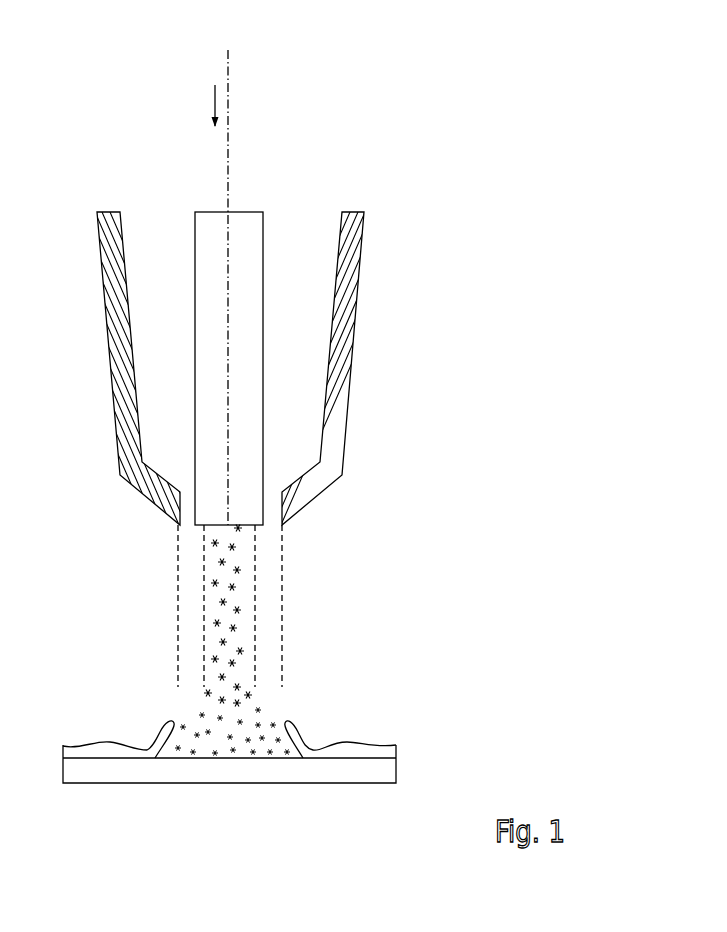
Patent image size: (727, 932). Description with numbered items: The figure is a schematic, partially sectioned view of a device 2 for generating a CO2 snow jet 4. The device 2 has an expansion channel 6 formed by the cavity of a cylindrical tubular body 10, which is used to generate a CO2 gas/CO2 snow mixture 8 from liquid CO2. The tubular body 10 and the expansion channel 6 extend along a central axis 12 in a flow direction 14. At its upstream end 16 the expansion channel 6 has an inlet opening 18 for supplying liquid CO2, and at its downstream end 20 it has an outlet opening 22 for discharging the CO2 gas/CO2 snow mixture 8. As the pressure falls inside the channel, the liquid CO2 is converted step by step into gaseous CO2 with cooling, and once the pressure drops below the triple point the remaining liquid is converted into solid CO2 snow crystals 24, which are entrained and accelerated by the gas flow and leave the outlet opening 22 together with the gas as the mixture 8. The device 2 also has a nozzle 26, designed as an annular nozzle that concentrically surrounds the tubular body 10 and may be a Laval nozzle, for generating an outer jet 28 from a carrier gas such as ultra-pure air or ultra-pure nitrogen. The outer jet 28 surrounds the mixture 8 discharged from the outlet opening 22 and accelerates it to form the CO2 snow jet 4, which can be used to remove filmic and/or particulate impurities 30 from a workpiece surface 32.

The device 2 is at (127, 57).
The CO2 snow jet 4 is at (386, 611).
The expansion channel 6 is at (210, 238).
The CO2 gas/CO2 snow mixture 8 is at (247, 610).
The tubular body 10 is at (265, 223).
The central axis 12 is at (230, 97).
The flow direction 14 is at (213, 94).
The upstream end 16 is at (207, 198).
The inlet opening 18 is at (237, 211).
The downstream end 20 is at (197, 538).
The outlet opening 22 is at (244, 528).
The CO2 snow crystals 24 is at (232, 663).
The nozzle 26 is at (113, 395).
The outer jet 28 is at (190, 600).
The impurities 30 is at (70, 748).
The workpiece surface 32 is at (85, 775).